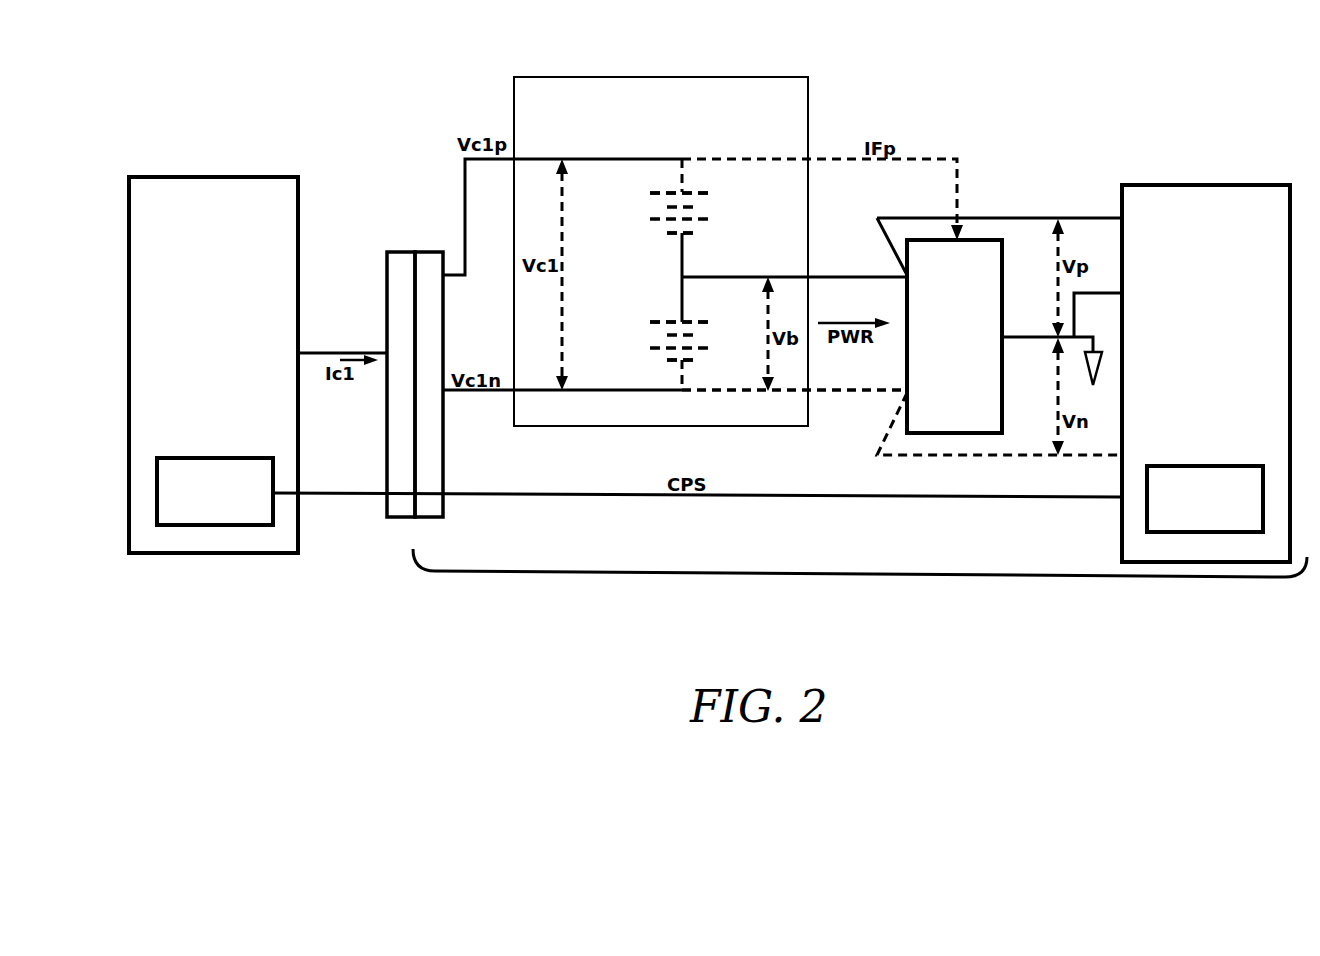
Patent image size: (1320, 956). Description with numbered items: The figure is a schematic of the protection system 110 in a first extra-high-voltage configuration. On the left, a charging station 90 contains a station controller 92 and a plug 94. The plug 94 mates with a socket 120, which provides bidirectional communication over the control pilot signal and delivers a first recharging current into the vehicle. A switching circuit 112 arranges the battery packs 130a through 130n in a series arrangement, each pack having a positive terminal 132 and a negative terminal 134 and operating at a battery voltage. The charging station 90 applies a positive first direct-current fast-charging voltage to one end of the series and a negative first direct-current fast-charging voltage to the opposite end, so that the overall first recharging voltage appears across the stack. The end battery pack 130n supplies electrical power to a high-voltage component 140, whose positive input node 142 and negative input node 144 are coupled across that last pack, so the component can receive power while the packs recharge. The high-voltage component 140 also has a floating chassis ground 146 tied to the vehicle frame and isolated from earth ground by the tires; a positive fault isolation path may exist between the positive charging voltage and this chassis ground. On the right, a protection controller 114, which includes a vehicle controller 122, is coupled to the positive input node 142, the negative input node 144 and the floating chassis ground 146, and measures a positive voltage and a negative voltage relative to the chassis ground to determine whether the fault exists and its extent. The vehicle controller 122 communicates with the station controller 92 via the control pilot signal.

The charging station 90 is at (213, 177).
The station controller 92 is at (213, 458).
The plug 94 is at (393, 252).
The protection system 110 is at (862, 574).
The switching circuit 112 is at (648, 77).
The protection controller 114 is at (1205, 185).
The socket 120 is at (430, 252).
The vehicle controller 122 is at (1203, 466).
The battery pack 130a is at (663, 207).
The battery pack 130n is at (667, 335).
The positive terminal 132 is at (684, 190).
The negative terminal 134 is at (684, 236).
The high-voltage component 140 is at (982, 240).
The positive input node 142 is at (907, 287).
The negative input node 144 is at (907, 390).
The floating chassis ground 146 is at (1003, 337).